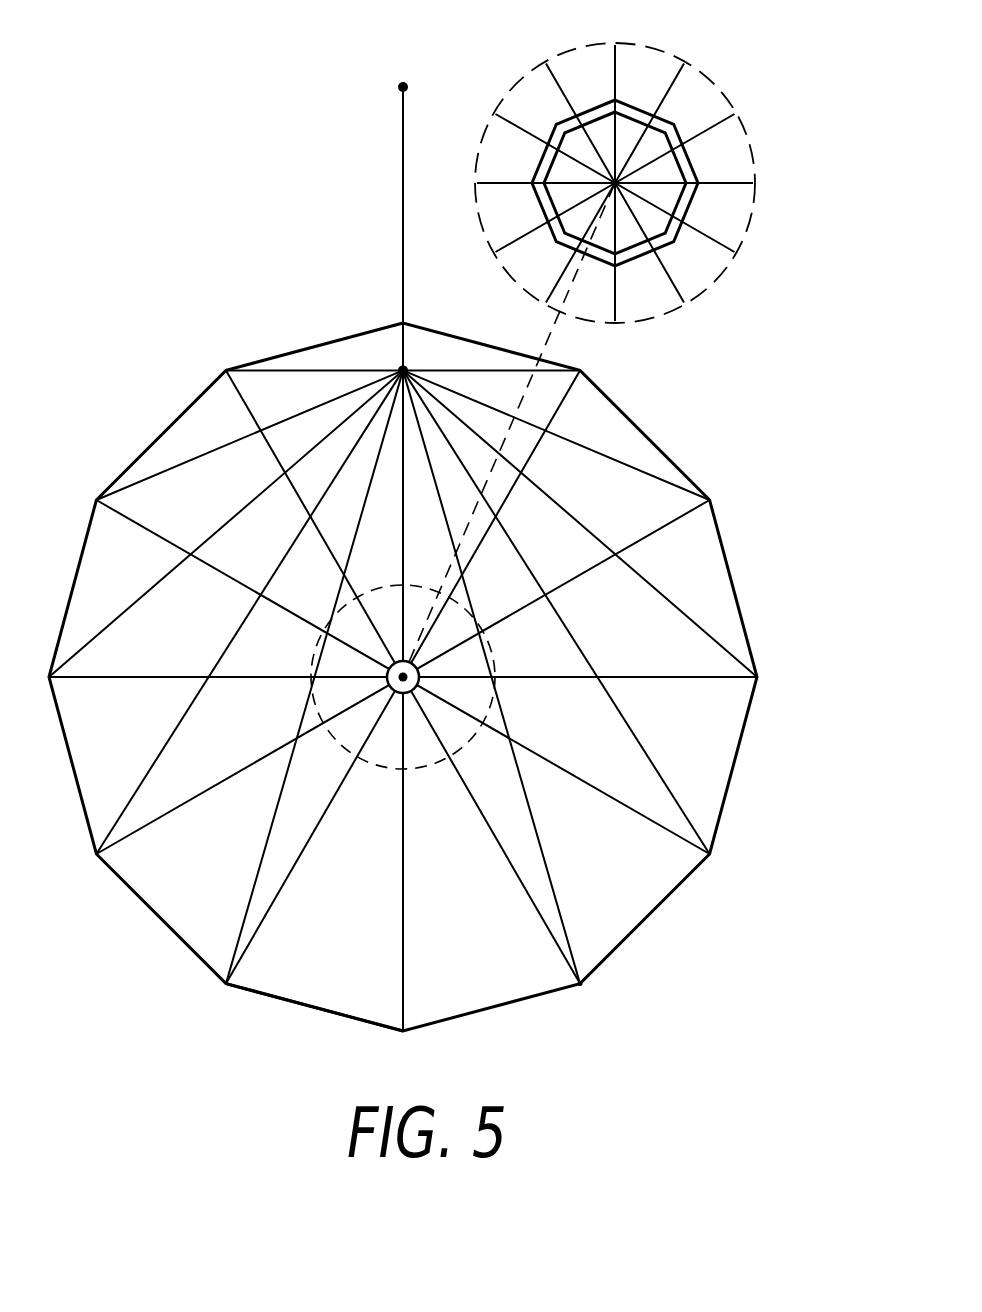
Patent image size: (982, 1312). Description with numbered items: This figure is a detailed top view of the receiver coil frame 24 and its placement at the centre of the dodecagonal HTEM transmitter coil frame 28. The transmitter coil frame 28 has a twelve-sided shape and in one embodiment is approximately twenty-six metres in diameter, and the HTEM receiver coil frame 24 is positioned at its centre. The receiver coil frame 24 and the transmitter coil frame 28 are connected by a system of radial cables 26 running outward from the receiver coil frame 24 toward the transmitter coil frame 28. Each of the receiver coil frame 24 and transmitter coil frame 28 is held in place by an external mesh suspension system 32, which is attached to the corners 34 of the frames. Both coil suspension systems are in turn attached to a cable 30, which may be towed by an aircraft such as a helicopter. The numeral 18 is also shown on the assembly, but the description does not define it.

The polygonal frame 18 is at (733, 765).
The receiver coil frame 24 is at (690, 160).
The radial cables 26 is at (712, 236).
The transmitter coil frame 28 is at (333, 1013).
The cable 30 is at (403, 207).
The external mesh suspension system 32 is at (557, 890).
The corners 34 is at (584, 986).